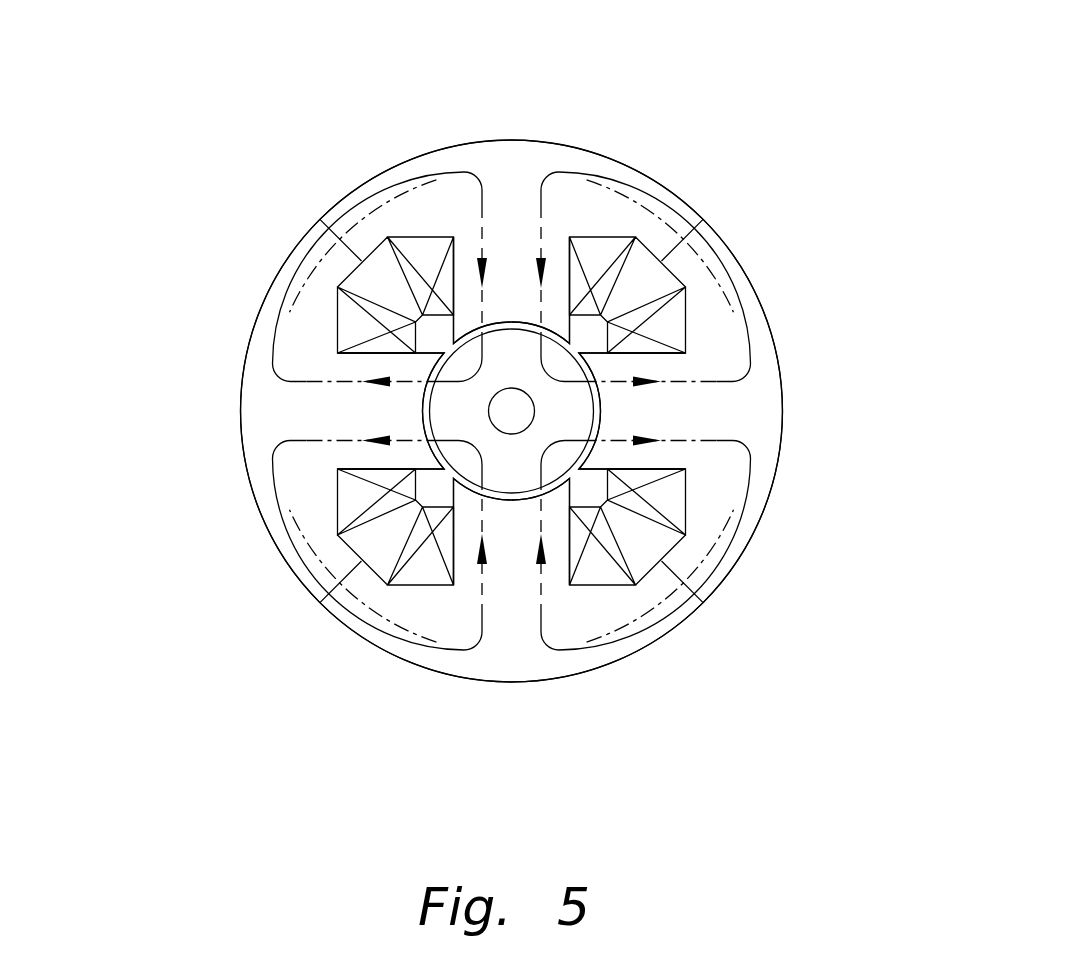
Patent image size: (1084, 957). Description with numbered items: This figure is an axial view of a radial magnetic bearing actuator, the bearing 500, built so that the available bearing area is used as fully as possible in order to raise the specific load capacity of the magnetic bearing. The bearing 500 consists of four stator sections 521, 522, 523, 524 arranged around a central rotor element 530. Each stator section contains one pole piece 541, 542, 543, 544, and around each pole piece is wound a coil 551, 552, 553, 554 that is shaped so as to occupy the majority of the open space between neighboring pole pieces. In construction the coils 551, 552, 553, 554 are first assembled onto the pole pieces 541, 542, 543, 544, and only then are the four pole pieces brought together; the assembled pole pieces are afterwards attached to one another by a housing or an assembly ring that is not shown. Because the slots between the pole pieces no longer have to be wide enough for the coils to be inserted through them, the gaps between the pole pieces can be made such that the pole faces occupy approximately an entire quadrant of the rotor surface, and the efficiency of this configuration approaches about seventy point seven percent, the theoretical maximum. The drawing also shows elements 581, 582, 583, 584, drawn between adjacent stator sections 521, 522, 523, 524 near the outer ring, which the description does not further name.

The bearing 500 is at (493, 394).
The stator section 521 is at (588, 150).
The stator section 522 is at (783, 387).
The stator section 523 is at (604, 668).
The stator section 524 is at (255, 500).
The rotor element 530 is at (600, 507).
The pole piece 541 is at (505, 233).
The pole piece 542 is at (708, 406).
The pole piece 543 is at (509, 620).
The pole piece 544 is at (322, 412).
The coil 551 is at (628, 268).
The coil 552 is at (609, 500).
The coil 553 is at (430, 588).
The coil 554 is at (357, 342).
The flux path arc 581 is at (693, 233).
The flux path arc 582 is at (690, 590).
The flux path arc 583 is at (327, 599).
The flux path arc 584 is at (329, 229).